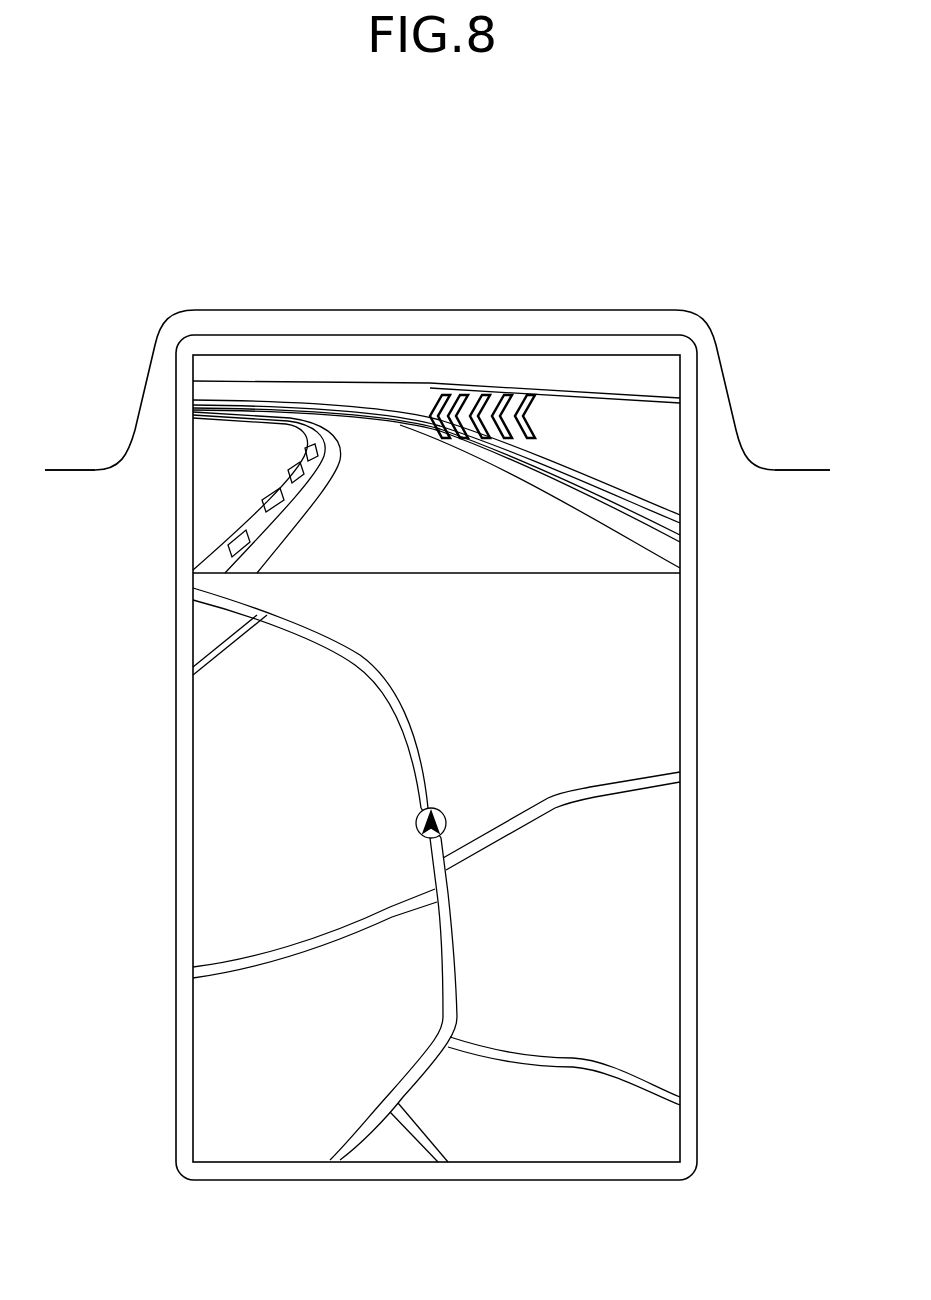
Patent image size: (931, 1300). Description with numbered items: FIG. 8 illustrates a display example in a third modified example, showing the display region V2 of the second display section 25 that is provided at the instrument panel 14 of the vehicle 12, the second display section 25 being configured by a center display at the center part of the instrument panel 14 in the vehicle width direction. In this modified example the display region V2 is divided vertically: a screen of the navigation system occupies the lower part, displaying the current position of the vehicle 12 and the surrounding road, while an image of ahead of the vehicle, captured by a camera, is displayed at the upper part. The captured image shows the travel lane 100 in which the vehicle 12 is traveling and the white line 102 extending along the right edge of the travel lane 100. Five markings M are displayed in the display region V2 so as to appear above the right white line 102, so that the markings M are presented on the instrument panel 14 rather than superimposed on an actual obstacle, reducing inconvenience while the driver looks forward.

The vehicle 12 is at (191, 248).
The instrument panel 14 is at (80, 468).
The second display section 25 is at (478, 355).
The markings M is at (460, 397).
The travel lane 100 is at (636, 560).
The white line 102 is at (663, 537).
The display region V2 is at (568, 699).